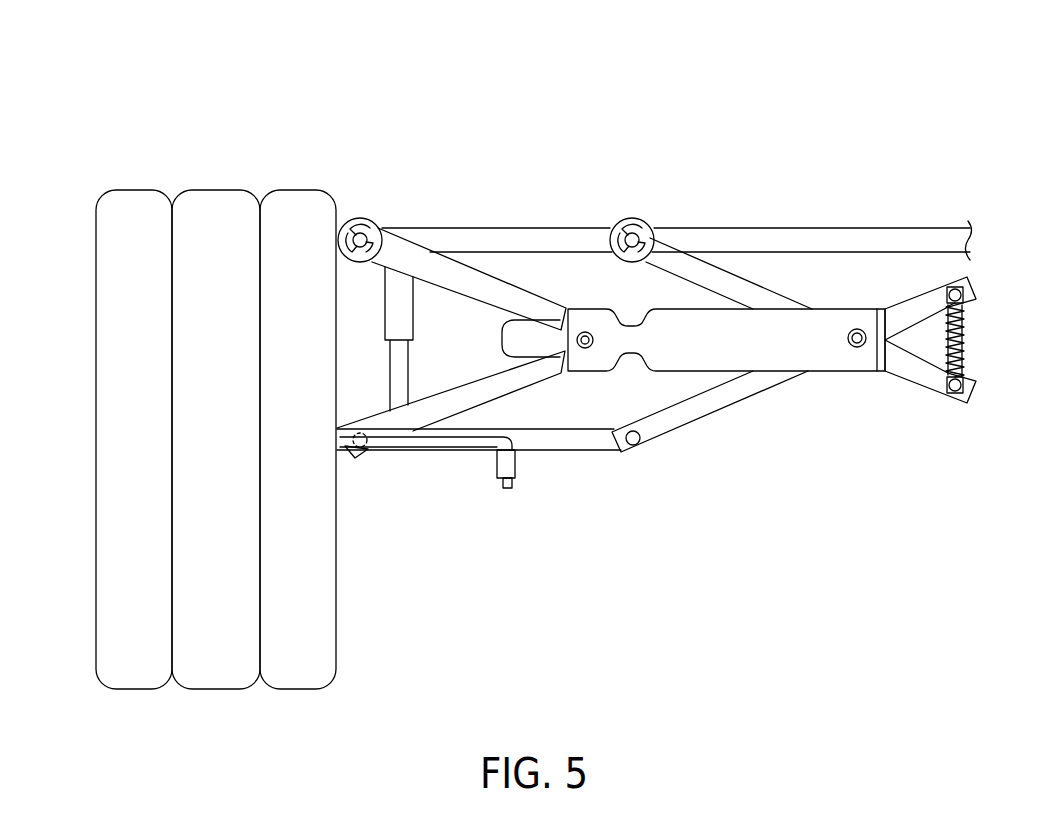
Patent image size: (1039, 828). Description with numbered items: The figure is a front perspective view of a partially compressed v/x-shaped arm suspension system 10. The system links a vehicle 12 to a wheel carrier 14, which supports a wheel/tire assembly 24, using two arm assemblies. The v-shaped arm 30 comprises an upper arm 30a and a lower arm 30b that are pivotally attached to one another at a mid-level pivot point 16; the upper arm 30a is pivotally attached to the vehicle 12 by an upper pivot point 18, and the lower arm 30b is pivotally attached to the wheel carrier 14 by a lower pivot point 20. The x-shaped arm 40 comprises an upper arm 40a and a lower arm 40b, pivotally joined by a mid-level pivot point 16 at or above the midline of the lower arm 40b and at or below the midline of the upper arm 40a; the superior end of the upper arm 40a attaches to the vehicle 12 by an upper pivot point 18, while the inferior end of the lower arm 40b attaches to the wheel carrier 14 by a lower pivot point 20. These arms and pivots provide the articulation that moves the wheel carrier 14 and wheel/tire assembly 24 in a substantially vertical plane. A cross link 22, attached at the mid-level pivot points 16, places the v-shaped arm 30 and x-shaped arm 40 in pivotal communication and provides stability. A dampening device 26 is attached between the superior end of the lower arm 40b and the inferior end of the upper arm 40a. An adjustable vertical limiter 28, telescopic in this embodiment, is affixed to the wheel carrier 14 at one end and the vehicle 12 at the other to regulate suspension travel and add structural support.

The suspension system 10 is at (808, 98).
The vehicle 12 is at (878, 240).
The wheel carrier 14 is at (553, 440).
The mid-level pivot point 16 is at (588, 345).
The upper pivot point 18 is at (359, 240).
The lower pivot point 20 is at (366, 452).
The cross link 22 is at (801, 350).
The wheel/tire assembly 24 is at (110, 589).
The dampening device 26 is at (964, 296).
The adjustable vertical limiter 28 is at (403, 305).
The v-shaped arm 30 is at (451, 304).
The upper arm 30a is at (400, 257).
The lower arm 30b is at (452, 407).
The x-shaped arm 40 is at (717, 329).
The upper arm 40a is at (723, 270).
The lower arm 40b is at (734, 402).